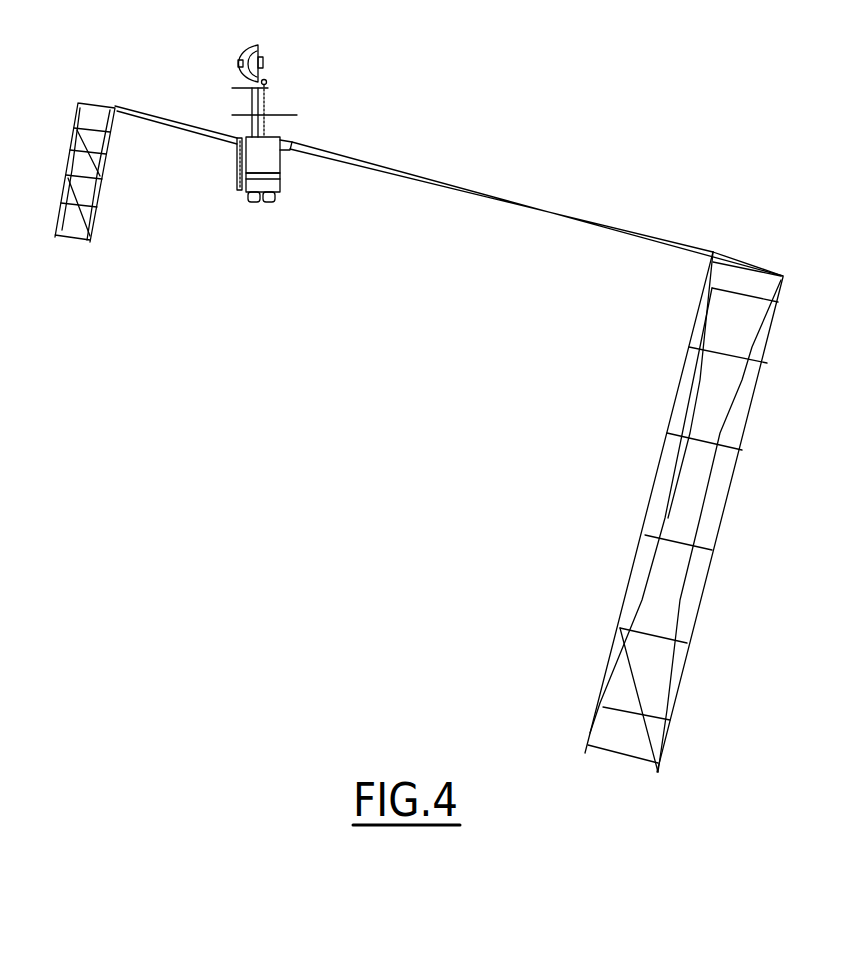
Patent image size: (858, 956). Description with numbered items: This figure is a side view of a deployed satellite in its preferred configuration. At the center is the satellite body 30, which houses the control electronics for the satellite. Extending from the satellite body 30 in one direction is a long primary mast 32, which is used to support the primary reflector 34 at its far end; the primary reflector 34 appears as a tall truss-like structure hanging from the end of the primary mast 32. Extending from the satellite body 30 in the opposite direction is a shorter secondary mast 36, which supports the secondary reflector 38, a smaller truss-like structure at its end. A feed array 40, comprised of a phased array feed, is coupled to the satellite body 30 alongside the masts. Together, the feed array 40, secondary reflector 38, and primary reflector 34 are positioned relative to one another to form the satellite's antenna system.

The satellite body 30 is at (272, 153).
The primary mast 32 is at (536, 209).
The primary reflector 34 is at (745, 438).
The secondary mast 36 is at (183, 122).
The secondary reflector 38 is at (78, 243).
The feed array 40 is at (236, 168).